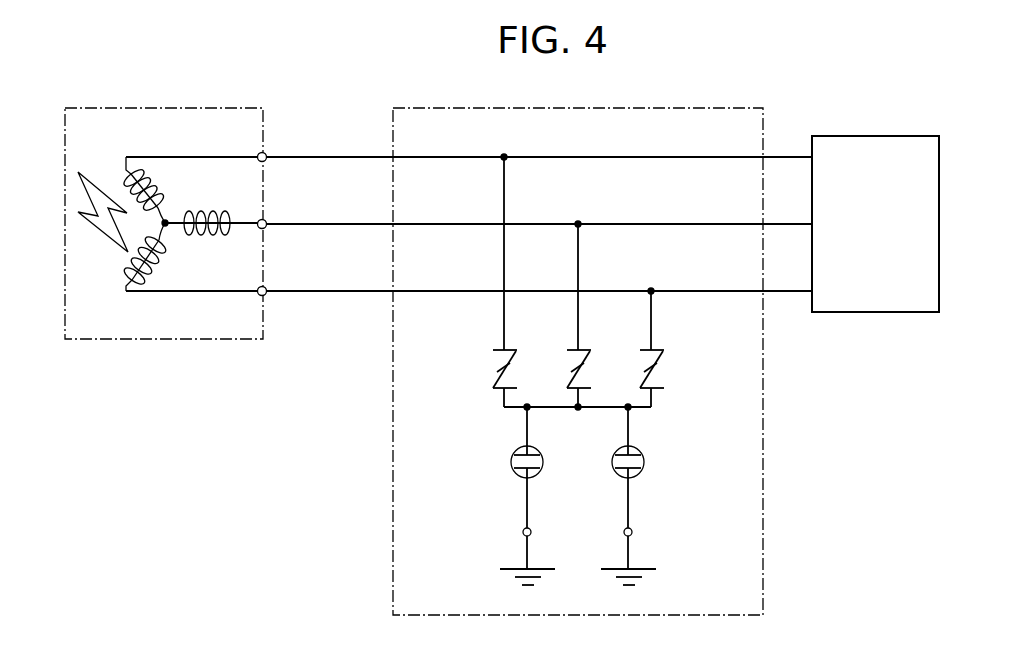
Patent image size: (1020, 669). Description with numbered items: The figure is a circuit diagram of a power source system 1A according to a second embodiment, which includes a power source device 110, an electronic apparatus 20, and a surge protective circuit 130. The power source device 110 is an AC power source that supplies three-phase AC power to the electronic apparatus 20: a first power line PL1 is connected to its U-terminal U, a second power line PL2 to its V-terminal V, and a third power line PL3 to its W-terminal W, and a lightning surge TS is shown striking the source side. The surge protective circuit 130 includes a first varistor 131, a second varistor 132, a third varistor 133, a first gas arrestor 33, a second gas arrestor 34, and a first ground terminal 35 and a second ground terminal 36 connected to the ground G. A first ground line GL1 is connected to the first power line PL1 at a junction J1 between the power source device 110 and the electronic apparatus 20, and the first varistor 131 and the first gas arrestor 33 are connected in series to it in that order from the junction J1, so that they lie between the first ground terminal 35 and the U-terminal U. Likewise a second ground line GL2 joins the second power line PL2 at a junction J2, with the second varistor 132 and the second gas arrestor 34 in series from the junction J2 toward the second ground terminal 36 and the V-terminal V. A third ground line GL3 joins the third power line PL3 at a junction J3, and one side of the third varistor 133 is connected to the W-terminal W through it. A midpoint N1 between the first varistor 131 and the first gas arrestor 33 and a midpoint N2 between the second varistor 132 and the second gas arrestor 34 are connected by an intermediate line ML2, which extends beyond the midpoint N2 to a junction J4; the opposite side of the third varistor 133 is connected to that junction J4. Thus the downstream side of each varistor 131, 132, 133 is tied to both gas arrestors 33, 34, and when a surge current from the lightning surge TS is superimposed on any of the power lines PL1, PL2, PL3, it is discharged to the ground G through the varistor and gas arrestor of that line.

The power source system 1A is at (814, 50).
The power source device 110 is at (167, 107).
The lightning surge TS is at (78, 228).
The surge protective circuit 130 is at (653, 107).
The electronic apparatus 20 is at (898, 136).
The first power line PL1 is at (350, 145).
The second power line PL2 is at (350, 221).
The third power line PL3 is at (350, 288).
The U-terminal U is at (267, 156).
The V-terminal V is at (267, 223).
The W-terminal W is at (267, 290).
The first ground line GL1 is at (503, 303).
The second ground line GL2 is at (613, 320).
The third ground line GL3 is at (655, 305).
The junction J1 is at (508, 156).
The junction J2 is at (582, 223).
The junction J3 is at (655, 290).
The junction J4 is at (633, 410).
The first varistor 131 is at (497, 350).
The second varistor 132 is at (570, 350).
The third varistor 133 is at (665, 352).
The intermediate line ML2 is at (557, 405).
The midpoint N1 is at (522, 410).
The midpoint N2 is at (578, 410).
The first gas arrestor 33 is at (522, 478).
The second gas arrestor 34 is at (635, 478).
The first ground terminal 35 is at (523, 532).
The second ground terminal 36 is at (632, 532).
The ground G is at (578, 570).